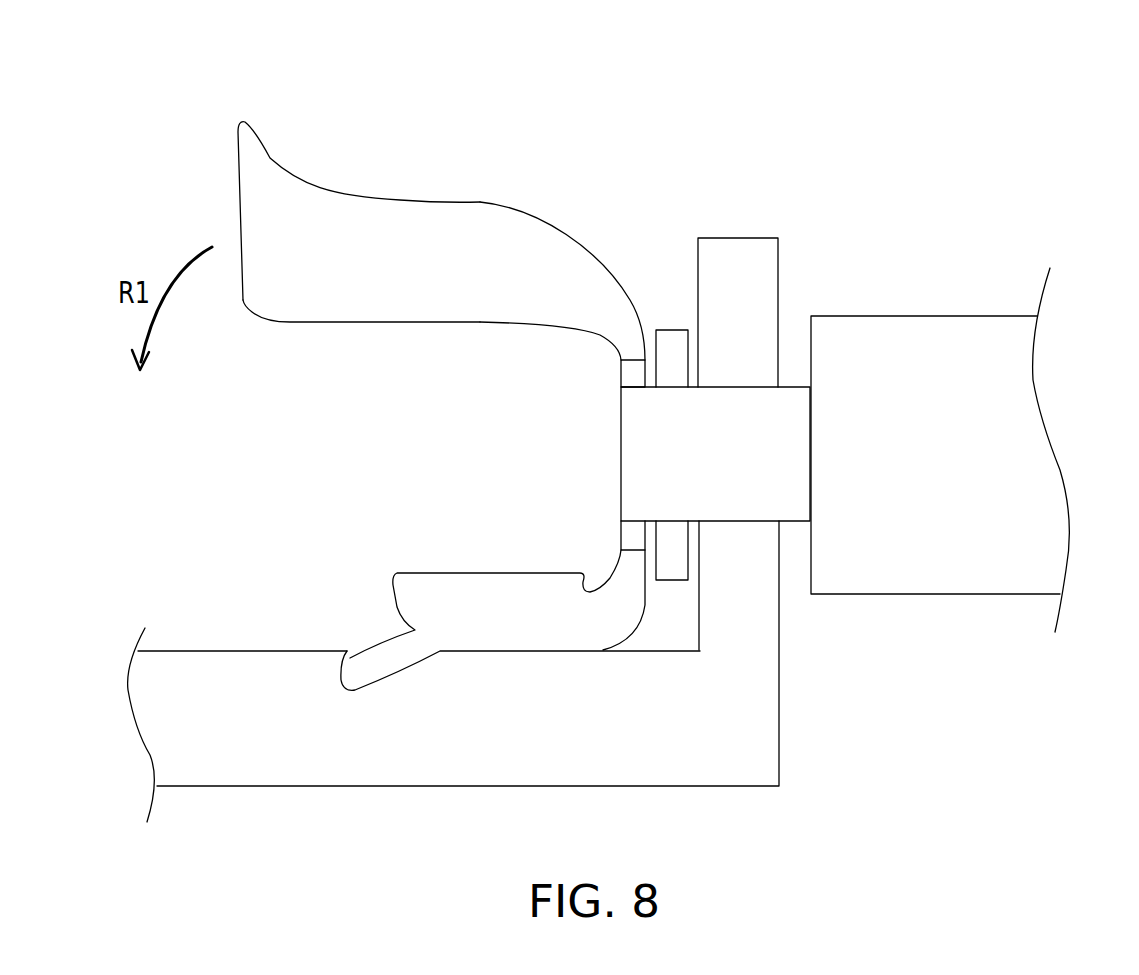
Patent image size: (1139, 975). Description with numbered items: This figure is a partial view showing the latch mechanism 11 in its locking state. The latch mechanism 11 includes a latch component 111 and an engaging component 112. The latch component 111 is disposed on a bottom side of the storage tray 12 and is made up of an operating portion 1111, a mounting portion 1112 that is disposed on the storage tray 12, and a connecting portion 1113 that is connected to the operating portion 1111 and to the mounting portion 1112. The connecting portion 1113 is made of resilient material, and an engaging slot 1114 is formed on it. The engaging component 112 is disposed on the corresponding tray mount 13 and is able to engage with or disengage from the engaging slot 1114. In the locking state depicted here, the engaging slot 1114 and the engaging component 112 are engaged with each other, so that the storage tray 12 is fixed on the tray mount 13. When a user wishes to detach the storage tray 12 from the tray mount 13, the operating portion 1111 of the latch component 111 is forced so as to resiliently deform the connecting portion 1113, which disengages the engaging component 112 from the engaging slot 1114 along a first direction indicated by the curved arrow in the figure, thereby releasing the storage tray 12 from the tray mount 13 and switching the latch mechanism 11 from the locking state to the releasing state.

The latch mechanism 11 is at (1015, 73).
The latch component 111 is at (173, 100).
The operating portion 1111 is at (399, 222).
The mounting portion 1112 is at (499, 625).
The connecting portion 1113 is at (600, 298).
The engaging slot 1114 is at (590, 377).
The engaging component 112 is at (742, 432).
The storage tray 12 is at (745, 618).
The tray mount 13 is at (957, 332).